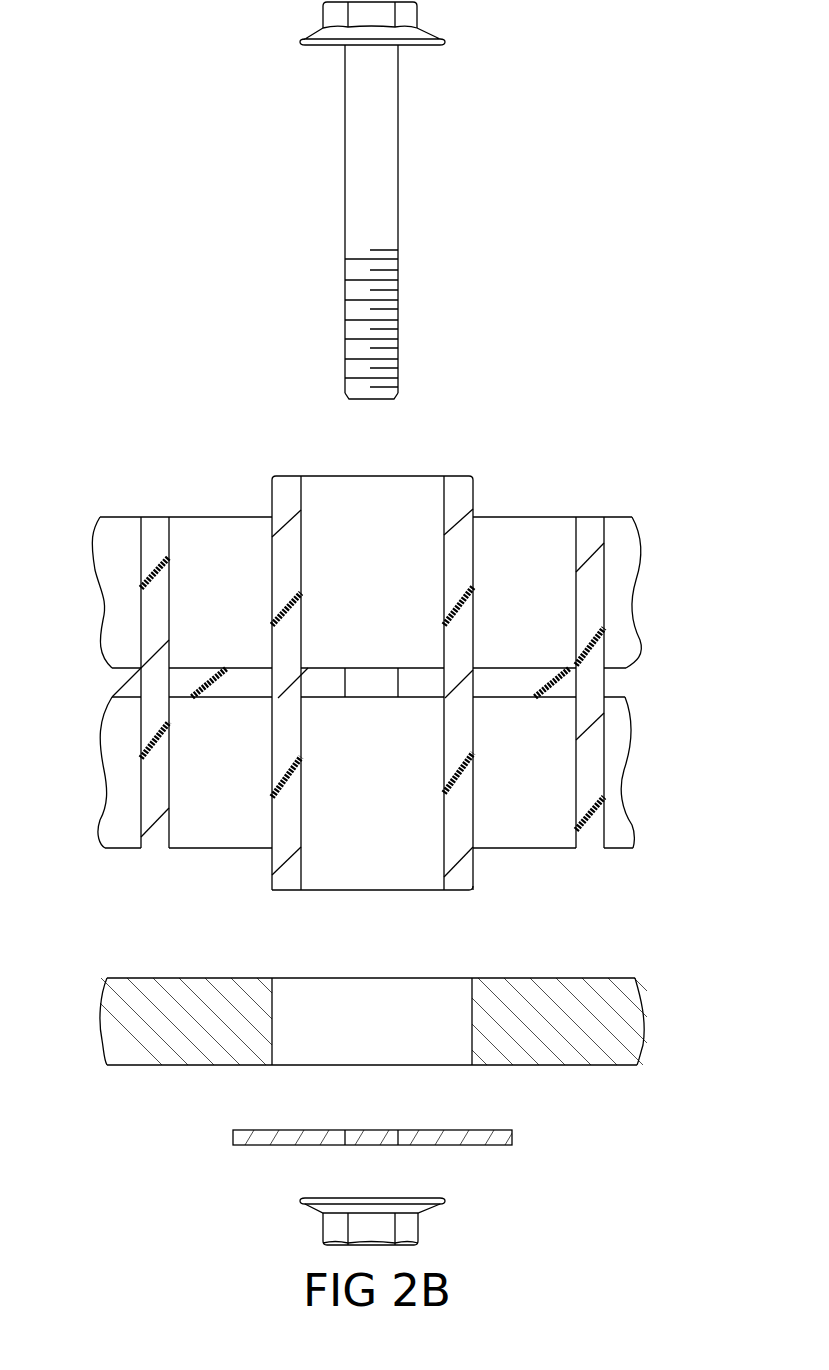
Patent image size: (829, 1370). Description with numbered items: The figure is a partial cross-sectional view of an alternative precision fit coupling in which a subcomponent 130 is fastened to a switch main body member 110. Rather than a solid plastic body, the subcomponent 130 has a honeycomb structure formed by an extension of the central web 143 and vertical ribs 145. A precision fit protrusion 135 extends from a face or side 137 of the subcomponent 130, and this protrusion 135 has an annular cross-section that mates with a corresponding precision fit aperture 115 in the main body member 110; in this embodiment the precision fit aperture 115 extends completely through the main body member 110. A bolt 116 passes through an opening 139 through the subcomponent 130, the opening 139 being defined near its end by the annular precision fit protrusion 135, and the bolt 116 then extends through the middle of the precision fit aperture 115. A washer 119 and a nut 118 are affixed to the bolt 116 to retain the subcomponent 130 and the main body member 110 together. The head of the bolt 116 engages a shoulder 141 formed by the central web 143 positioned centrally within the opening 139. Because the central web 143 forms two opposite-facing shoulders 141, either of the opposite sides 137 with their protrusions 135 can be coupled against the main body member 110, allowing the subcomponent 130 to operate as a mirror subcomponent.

The main body member 110 is at (605, 1025).
The precision fit aperture 115 is at (472, 1040).
The bolt 116 is at (382, 165).
The nut 118 is at (408, 1228).
The washer 119 is at (278, 1128).
The subcomponent 130 is at (640, 642).
The precision fit protrusion 135 is at (455, 487).
The face or side 137 is at (537, 517).
The opening 139 is at (332, 495).
The shoulder 141 is at (322, 667).
The central web 143 is at (518, 688).
The vertical ribs 145 is at (593, 593).